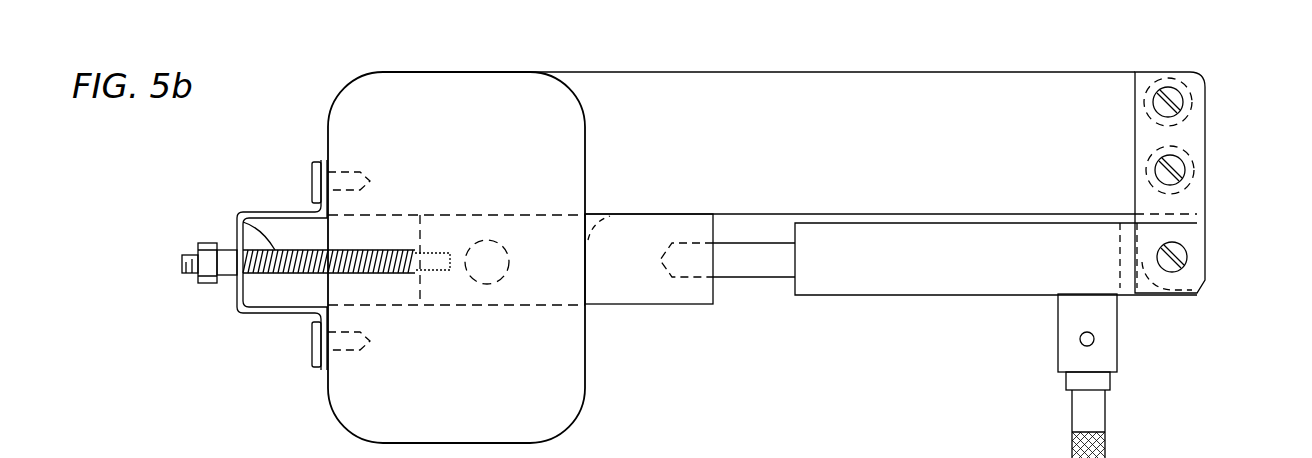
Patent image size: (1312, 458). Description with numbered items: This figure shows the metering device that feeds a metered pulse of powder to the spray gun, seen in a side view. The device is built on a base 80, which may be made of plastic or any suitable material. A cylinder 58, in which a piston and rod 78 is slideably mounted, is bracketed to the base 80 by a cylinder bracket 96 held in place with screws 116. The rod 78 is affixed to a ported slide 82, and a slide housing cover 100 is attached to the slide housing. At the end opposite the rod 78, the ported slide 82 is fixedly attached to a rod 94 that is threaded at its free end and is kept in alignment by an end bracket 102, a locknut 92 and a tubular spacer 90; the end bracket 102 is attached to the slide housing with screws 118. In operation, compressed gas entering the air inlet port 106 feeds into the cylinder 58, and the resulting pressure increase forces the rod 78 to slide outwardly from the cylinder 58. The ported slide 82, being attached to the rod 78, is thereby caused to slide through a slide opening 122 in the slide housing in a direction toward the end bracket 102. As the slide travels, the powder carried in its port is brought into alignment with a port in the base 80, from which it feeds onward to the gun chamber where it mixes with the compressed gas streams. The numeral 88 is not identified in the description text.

The slide housing cover 100 is at (540, 115).
The base 80 is at (1083, 97).
The cylinder bracket 96 is at (1208, 165).
The screws 116 is at (1183, 103).
The cylinder 58 is at (910, 272).
The piston and rod 78 is at (772, 272).
The ported slide 82 is at (638, 290).
The threaded rod 88 is at (258, 245).
The locknut 92 is at (207, 243).
The rod 94 is at (182, 268).
The tubular spacer 90 is at (225, 282).
The end bracket 102 is at (270, 315).
The screws 118 is at (312, 175).
The slide opening 122 is at (415, 215).
The air inlet port 106 is at (1100, 415).